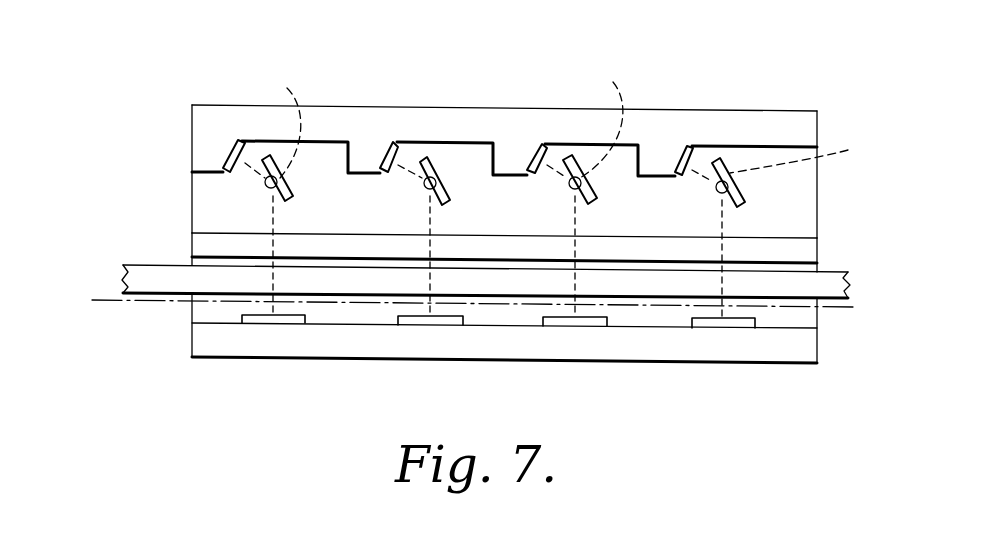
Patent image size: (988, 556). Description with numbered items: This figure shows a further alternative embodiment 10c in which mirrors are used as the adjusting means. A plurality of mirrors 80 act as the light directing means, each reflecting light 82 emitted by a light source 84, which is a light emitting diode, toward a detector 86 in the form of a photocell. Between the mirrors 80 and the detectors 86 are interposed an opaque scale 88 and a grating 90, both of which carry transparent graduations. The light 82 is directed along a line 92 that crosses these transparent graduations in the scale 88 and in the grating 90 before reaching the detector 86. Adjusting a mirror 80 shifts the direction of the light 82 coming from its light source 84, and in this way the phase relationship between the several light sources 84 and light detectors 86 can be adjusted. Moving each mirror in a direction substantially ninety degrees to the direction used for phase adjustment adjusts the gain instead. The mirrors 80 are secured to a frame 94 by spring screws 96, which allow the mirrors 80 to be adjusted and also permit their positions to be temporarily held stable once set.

The embodiment 10c is at (380, 97).
The mirror 80 is at (264, 185).
The light 82 is at (428, 228).
The light source 84 is at (226, 150).
The detector 86 is at (290, 319).
The scale 88 is at (853, 290).
The grating 90 is at (804, 250).
The line 92 is at (106, 303).
The frame 94 is at (804, 110).
The spring screw 96 is at (565, 121).